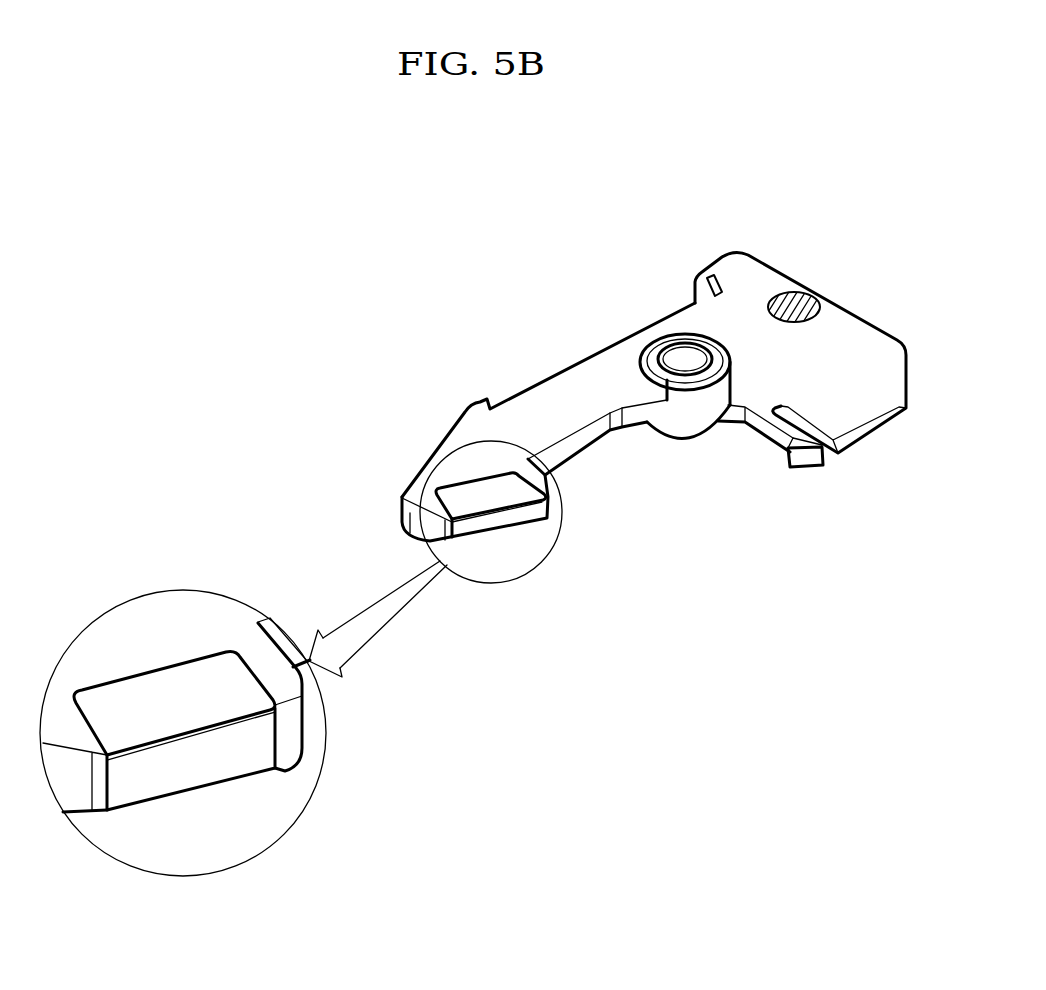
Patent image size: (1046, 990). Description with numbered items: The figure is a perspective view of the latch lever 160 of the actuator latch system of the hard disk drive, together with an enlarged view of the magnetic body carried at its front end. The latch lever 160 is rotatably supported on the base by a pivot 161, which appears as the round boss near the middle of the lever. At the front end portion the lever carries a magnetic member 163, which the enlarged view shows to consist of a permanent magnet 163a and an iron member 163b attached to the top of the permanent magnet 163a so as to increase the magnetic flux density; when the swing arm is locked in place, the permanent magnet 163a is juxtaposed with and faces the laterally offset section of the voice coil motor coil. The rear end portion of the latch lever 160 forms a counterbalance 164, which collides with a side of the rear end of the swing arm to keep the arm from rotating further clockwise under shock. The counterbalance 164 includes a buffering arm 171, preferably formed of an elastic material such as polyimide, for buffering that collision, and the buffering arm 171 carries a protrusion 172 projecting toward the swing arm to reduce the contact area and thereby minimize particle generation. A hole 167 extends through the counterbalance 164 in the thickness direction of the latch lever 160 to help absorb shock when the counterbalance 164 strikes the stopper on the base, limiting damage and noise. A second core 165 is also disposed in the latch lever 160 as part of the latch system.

The latch lever 160 is at (530, 362).
The pivot 161 is at (675, 360).
The magnetic member 163 is at (369, 658).
The permanent magnet 163a is at (493, 527).
The iron member 163b is at (503, 512).
The counterbalance 164 is at (870, 338).
The second core 165 is at (817, 297).
The hole 167 is at (708, 276).
The buffering arm 171 is at (780, 432).
The protrusion 172 is at (800, 462).